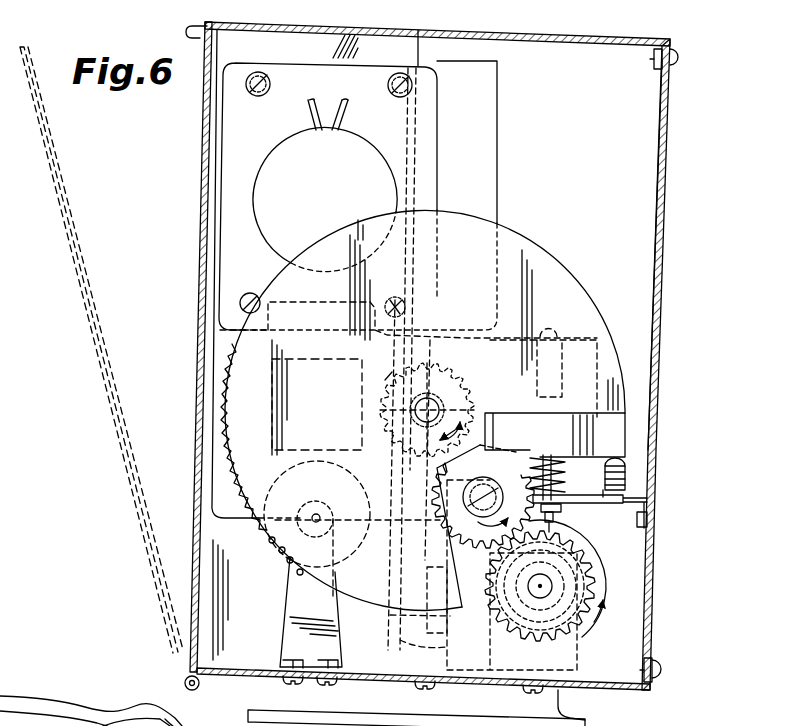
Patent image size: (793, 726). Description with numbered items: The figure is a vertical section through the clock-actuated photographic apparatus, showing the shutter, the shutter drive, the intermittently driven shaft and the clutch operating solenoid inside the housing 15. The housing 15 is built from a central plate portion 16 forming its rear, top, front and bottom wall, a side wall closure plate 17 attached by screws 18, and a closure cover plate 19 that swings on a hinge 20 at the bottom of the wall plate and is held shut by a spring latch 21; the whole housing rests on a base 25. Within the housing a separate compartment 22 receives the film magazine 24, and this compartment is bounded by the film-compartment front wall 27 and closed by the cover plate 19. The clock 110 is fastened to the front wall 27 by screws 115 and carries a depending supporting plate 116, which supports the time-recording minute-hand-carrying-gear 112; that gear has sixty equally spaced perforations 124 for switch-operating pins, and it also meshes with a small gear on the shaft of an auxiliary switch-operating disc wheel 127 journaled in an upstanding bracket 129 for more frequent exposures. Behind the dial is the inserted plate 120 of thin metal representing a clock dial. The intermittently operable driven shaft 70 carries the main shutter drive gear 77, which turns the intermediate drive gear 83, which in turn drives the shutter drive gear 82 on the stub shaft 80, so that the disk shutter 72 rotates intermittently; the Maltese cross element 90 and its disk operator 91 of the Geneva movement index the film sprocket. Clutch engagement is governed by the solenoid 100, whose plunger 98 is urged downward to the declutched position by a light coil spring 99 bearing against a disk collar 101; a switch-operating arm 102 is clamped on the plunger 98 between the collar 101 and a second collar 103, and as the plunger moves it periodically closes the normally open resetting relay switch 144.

The housing 15 is at (672, 118).
The central plate portion 16 is at (521, 33).
The side wall closure plate 17 is at (666, 153).
The screws 18 is at (676, 57).
The closure cover plate 19 is at (205, 149).
The hinge 20 is at (185, 681).
The spring latch 21 is at (190, 26).
The compartment 22 is at (100, 716).
The film magazine 24 is at (25, 710).
The base 25 is at (258, 712).
The film-compartment front wall 27 is at (383, 55).
The driven shaft 70 is at (553, 586).
The disk shutter 72 is at (548, 272).
The main shutter drive gear 77 is at (552, 588).
The stub shaft 80 is at (447, 384).
The shutter drive gear 82 is at (392, 370).
The intermediate drive gear 83 is at (500, 460).
The Maltese cross element 90 is at (395, 622).
The disk operator 91 is at (402, 636).
The plunger 98 is at (552, 526).
The coil spring 99 is at (567, 472).
The solenoid 100 is at (575, 440).
The disk collar 101 is at (563, 507).
The switch-operating arm 102 is at (650, 501).
The collar 103 is at (556, 516).
The clock 110 is at (424, 130).
The minute-hand-carrying-gear 112 is at (228, 377).
The screws 115 is at (246, 86).
The supporting plate 116 is at (218, 470).
The inserted plate 120 is at (343, 358).
The perforations 124 is at (276, 550).
The auxiliary switch-operating disc wheel 127 is at (276, 567).
The upstanding bracket 129 is at (299, 595).
The switch 144 is at (626, 486).